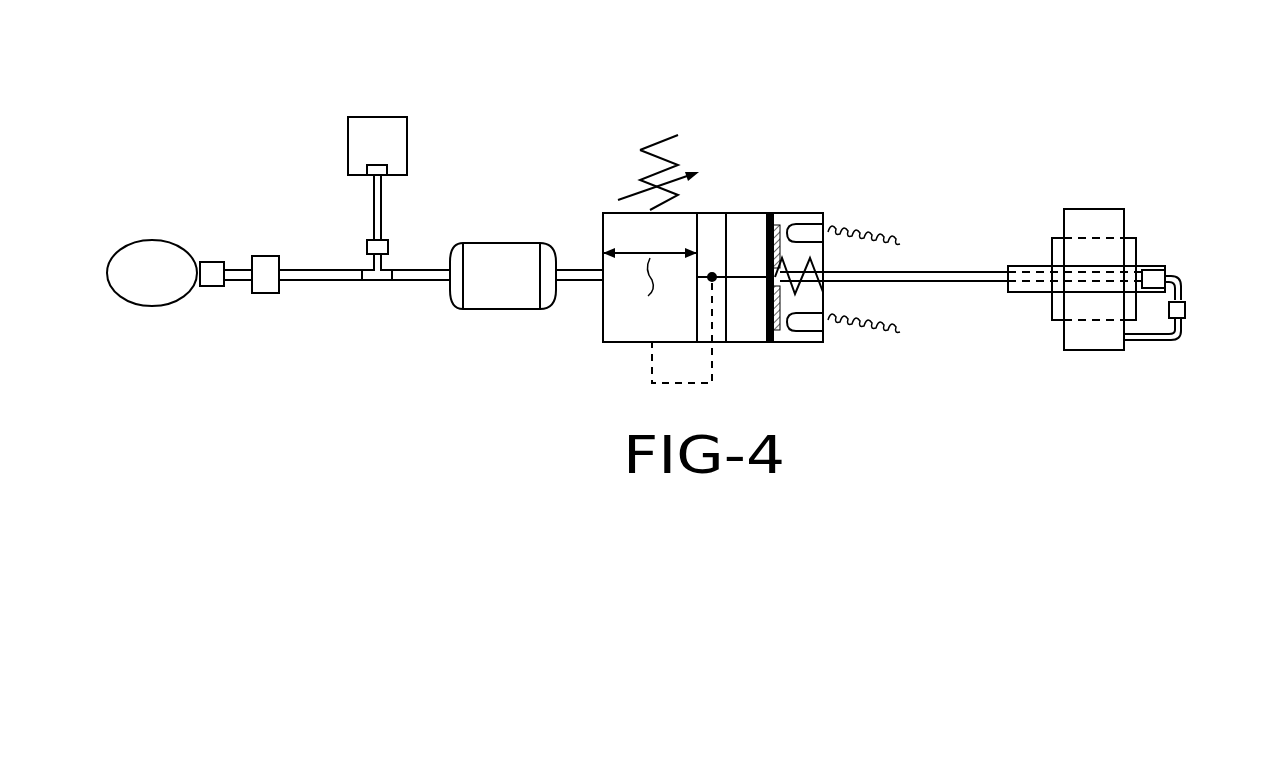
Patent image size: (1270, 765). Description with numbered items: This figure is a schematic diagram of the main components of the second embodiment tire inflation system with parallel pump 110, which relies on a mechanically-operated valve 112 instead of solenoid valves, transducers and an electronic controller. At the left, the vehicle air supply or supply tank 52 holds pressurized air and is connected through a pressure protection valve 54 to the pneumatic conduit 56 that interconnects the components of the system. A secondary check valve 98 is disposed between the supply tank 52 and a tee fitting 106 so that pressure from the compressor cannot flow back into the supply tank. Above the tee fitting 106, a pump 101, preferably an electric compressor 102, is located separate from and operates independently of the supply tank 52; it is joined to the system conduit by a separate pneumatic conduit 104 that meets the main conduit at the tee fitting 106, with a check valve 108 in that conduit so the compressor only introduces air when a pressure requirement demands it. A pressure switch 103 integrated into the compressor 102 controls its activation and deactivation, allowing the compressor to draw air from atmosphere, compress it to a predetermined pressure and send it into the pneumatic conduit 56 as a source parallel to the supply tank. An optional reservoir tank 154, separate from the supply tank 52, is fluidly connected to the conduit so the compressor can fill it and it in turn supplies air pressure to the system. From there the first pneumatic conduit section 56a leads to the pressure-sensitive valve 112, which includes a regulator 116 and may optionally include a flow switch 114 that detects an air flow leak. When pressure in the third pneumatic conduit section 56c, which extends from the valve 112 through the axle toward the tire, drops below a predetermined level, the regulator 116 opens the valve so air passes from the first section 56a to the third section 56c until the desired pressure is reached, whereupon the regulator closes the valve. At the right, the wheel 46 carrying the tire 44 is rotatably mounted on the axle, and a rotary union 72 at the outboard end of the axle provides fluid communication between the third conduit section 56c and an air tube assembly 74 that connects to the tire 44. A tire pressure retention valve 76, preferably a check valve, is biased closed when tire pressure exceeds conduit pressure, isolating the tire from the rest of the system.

The second embodiment tire inflation system with parallel pump 110 is at (197, 128).
The pump 101 is at (361, 108).
The electric compressor 102 is at (393, 152).
The pressure switch 103 is at (370, 170).
The pneumatic conduit 104 is at (383, 213).
The check valve 108 is at (368, 248).
The tee fitting 106 is at (373, 283).
The vehicle air supply 52 is at (137, 289).
The pressure protection valve 54 is at (212, 262).
The secondary check valve 98 is at (265, 294).
The pneumatic conduit 56 is at (332, 293).
The reservoir tank 154 is at (480, 289).
The first pneumatic conduit section 56a is at (576, 282).
The regulator 116 is at (607, 212).
The flow switch 114 is at (750, 212).
The mechanically-operated valve 112 is at (815, 208).
The third pneumatic conduit section 56c is at (948, 288).
The tire 44 is at (1078, 340).
The wheel 46 is at (1128, 244).
The rotary union 72 is at (1148, 272).
The air tube assembly 74 is at (1190, 340).
The tire pressure retention valve 76 is at (1187, 308).